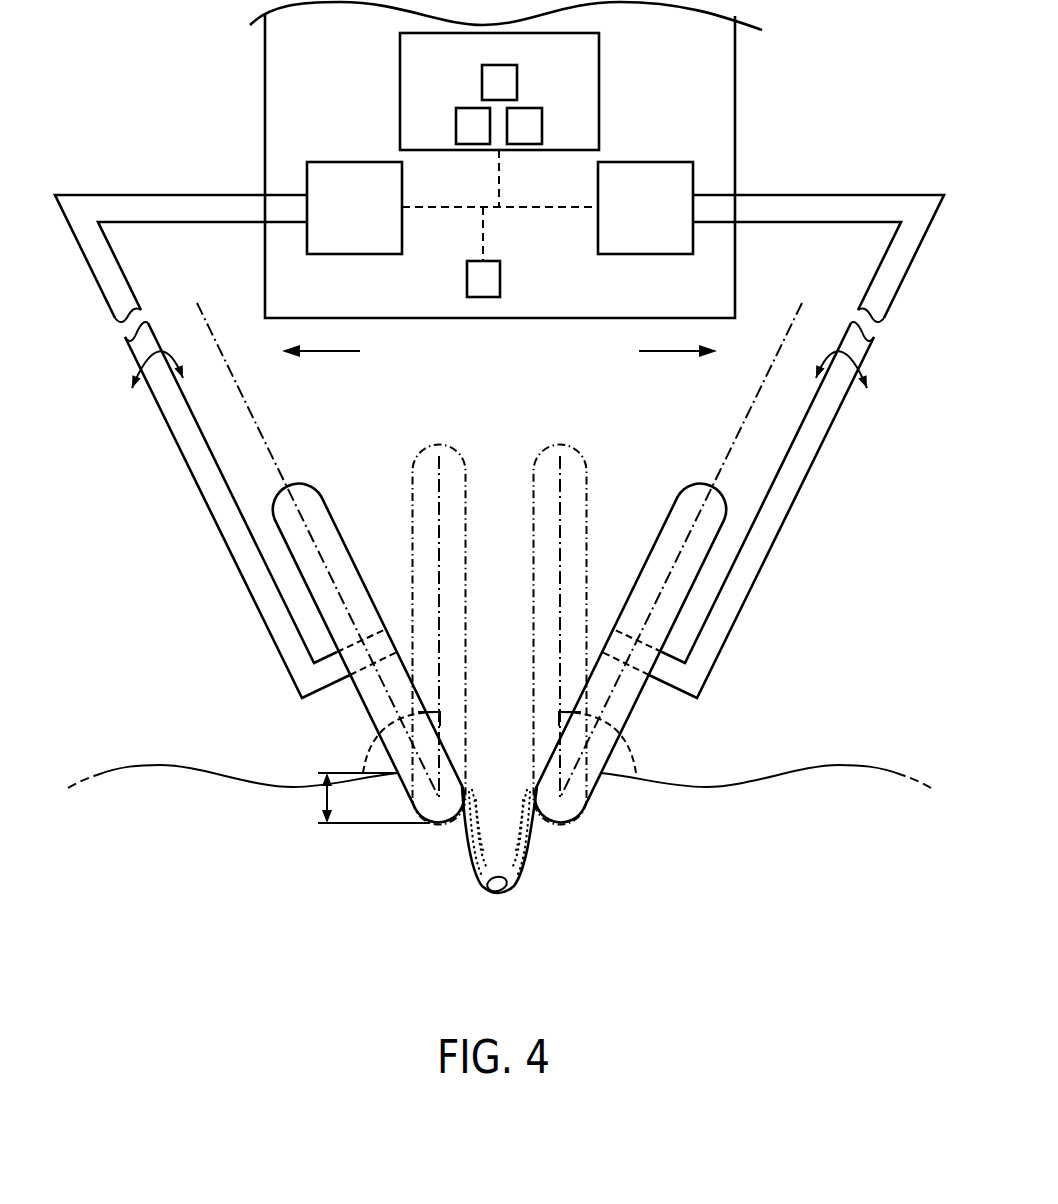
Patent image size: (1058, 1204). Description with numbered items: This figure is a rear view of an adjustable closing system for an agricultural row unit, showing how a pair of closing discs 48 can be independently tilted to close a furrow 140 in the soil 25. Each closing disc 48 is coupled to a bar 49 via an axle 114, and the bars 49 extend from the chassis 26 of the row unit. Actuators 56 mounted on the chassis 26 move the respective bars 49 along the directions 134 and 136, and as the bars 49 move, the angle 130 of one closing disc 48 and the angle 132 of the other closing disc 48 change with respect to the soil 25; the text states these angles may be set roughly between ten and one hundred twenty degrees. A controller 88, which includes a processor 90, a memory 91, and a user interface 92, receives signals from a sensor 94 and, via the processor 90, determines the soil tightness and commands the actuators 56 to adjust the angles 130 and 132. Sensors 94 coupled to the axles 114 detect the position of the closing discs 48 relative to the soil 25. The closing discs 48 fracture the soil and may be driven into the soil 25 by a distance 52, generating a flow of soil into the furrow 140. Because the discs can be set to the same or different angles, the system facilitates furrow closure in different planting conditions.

The soil 25 is at (795, 818).
The chassis 26 is at (265, 130).
The closing disc 48 is at (366, 706).
The bar 49 is at (213, 518).
The distance 52 is at (327, 797).
The actuator 56 is at (353, 162).
The controller 88 is at (400, 62).
The processor 90 is at (456, 127).
The memory 91 is at (542, 127).
The user interface 92 is at (517, 83).
The sensor 94 is at (500, 277).
The axle 114 is at (371, 638).
The angle 130 is at (364, 771).
The angle 132 is at (635, 771).
The axis/direction 134 is at (325, 351).
The axis/direction 136 is at (674, 351).
The furrow 140 is at (551, 847).